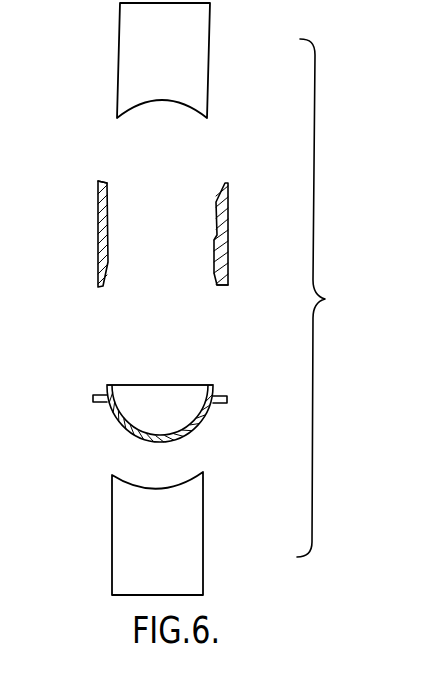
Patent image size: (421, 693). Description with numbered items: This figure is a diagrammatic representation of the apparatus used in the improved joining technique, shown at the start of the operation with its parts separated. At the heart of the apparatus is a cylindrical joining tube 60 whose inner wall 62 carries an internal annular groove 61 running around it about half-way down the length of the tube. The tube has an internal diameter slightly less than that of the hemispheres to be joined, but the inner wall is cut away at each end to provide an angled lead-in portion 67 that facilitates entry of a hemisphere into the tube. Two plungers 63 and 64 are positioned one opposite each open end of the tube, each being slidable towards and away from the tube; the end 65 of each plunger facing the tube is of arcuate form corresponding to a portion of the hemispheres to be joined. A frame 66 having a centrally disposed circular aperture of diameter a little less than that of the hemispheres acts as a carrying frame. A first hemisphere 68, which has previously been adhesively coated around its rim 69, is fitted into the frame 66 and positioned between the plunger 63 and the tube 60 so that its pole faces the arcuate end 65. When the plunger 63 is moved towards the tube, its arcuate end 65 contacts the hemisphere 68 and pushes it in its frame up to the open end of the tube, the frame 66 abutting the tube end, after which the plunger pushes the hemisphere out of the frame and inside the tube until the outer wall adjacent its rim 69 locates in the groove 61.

The joining tube 60 is at (229, 200).
The internal annular groove 61 is at (108, 240).
The inner wall 62 is at (216, 200).
The plunger 63 is at (192, 528).
The plunger 64 is at (202, 72).
The arcuate end 65 is at (136, 108).
The frame 66 is at (97, 402).
The lead-in portion 67 is at (130, 172).
The first hemisphere 68 is at (196, 424).
The rim 69 is at (108, 385).